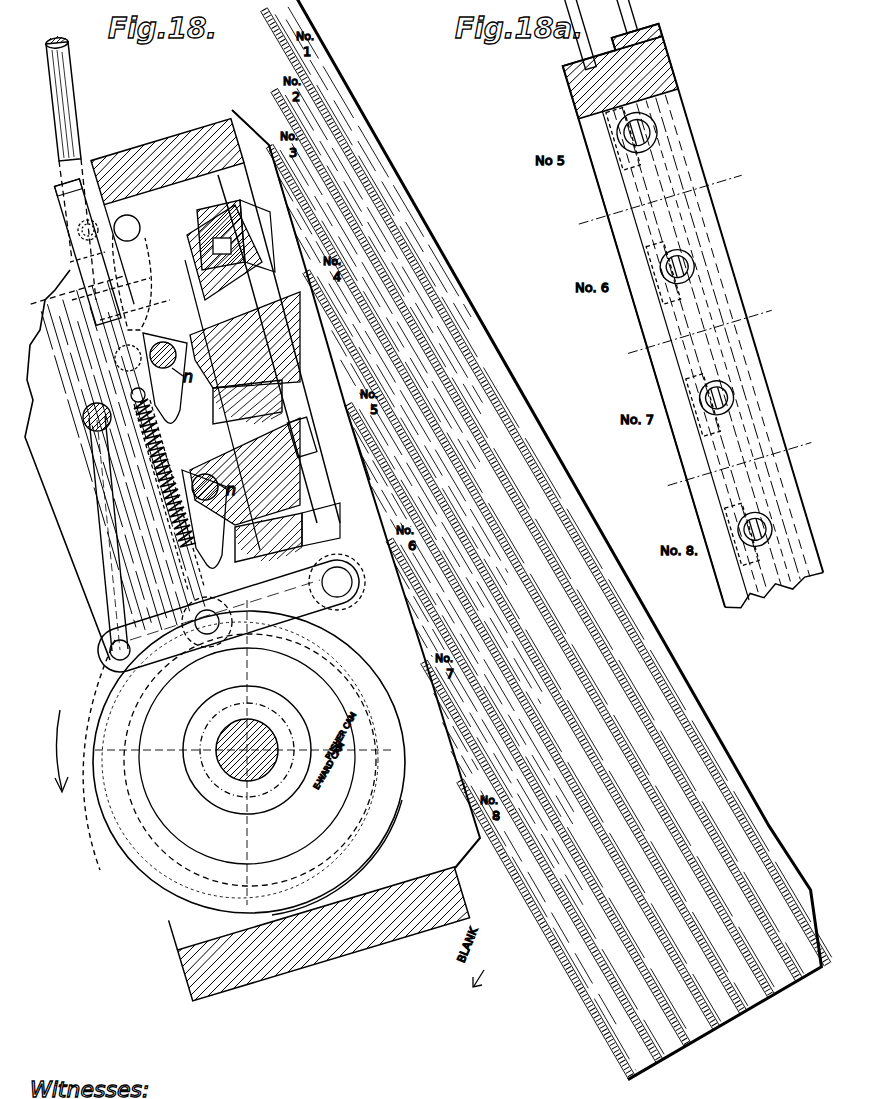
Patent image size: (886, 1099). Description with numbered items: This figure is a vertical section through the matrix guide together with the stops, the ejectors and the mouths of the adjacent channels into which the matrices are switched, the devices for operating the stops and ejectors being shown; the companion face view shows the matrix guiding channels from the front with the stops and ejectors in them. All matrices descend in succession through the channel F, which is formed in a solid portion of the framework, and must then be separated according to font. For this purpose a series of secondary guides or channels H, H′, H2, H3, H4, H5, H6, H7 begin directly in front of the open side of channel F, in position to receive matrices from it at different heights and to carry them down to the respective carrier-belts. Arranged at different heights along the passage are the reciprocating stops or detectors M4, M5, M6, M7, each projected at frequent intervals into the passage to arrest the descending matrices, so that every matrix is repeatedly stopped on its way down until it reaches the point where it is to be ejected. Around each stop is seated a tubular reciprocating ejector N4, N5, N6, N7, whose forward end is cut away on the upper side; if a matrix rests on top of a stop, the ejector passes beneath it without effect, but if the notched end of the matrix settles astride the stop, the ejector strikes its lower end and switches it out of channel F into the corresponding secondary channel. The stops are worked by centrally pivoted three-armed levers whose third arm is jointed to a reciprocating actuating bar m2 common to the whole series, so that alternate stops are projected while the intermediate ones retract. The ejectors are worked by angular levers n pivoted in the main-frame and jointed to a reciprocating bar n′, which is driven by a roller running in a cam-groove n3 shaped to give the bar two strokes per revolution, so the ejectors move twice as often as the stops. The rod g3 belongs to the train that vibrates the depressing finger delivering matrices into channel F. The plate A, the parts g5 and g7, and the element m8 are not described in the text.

In FIG. 18, the reciprocating bar n′ is at (78, 223).
In FIG. 18A, the reciprocating bar n′ is at (590, 45).
In FIG. 18, the angular lever n is at (75, 262).
In FIG. 18, the reciprocating ejector N5 is at (145, 238).
In FIG. 18A, the reciprocating ejector N5 is at (690, 268).
In FIG. 18, the reciprocating ejector N6 is at (190, 370).
In FIG. 18A, the reciprocating ejector N6 is at (735, 400).
In FIG. 18, the reciprocating ejector N7 is at (232, 522).
In FIG. 18A, the reciprocating ejector N7 is at (748, 548).
In FIG. 18A, the reciprocating ejector N4 is at (648, 130).
In FIG. 18A, the reciprocating stop M4 is at (632, 140).
In FIG. 18, the reciprocating stop M5 is at (262, 262).
In FIG. 18A, the reciprocating stop M5 is at (665, 275).
In FIG. 18, the reciprocating stop M6 is at (282, 390).
In FIG. 18A, the reciprocating stop M6 is at (705, 415).
In FIG. 18, the reciprocating stop M7 is at (340, 515).
In FIG. 18A, the reciprocating stop M7 is at (738, 530).
In FIG. 18, the channel plate A is at (280, 200).
In FIG. 18, the channel F is at (255, 352).
In FIG. 18A, the channel F is at (725, 358).
In FIG. 18, the secondary channel H is at (438, 252).
In FIG. 18, the secondary channel H′ is at (549, 529).
In FIG. 18, the secondary channel H2 is at (531, 565).
In FIG. 18, the secondary channel H3 is at (535, 636).
In FIG. 18, the secondary channel H4 is at (543, 710).
In FIG. 18, the secondary channel H5 is at (550, 785).
In FIG. 18, the secondary channel H6 is at (555, 853).
In FIG. 18, the secondary channel H7 is at (558, 921).
In FIG. 18, the rod g3 is at (102, 530).
In FIG. 18, the cam follower g5 is at (155, 780).
In FIG. 18, the arm g7 is at (231, 613).
In FIG. 18, the cam-groove n3 is at (145, 860).
In FIG. 18, the cam shaft m8 is at (249, 757).
In FIG. 18A, the reciprocating actuating bar m2 is at (636, 35).